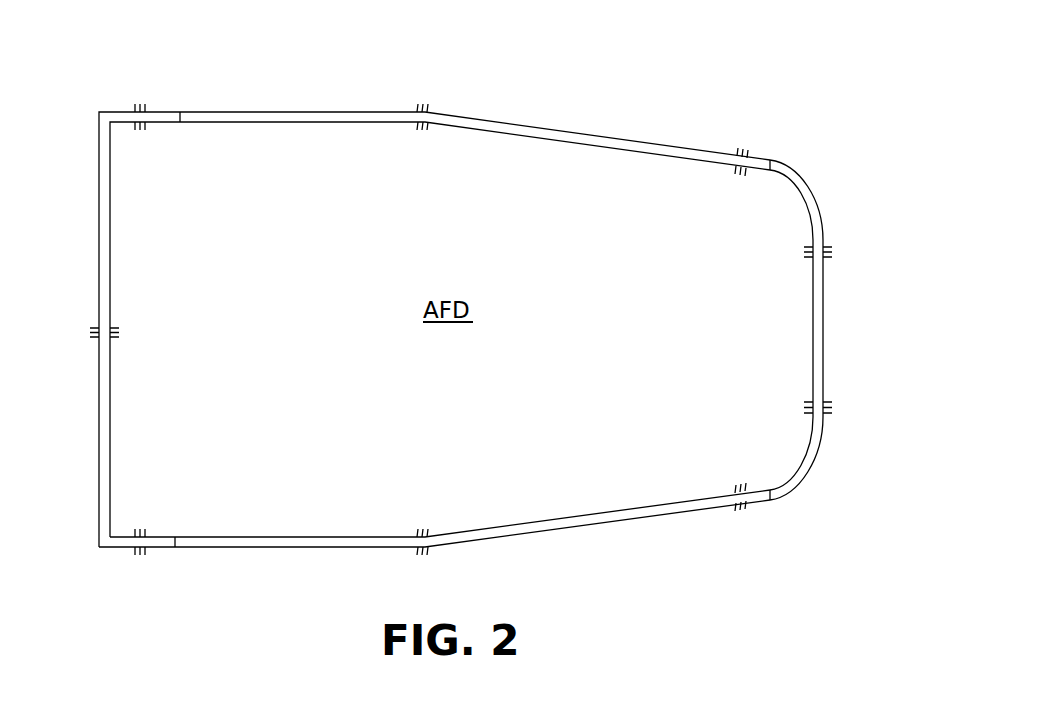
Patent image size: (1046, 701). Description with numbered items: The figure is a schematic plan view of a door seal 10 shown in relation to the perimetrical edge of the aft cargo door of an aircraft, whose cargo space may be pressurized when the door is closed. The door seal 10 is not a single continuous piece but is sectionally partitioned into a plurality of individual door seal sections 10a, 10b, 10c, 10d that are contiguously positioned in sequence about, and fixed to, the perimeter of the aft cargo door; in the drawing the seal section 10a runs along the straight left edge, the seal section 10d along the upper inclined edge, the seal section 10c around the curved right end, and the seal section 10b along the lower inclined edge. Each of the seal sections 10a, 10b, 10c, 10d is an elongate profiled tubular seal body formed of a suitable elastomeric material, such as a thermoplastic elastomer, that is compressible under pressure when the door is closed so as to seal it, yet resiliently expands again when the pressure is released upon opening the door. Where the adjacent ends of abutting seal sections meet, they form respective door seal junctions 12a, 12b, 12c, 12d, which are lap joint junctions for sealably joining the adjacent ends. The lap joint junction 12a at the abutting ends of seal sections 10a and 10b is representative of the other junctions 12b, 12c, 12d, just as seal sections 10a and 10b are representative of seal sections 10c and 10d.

The door seal 10 is at (640, 136).
The door seal section 10a is at (105, 262).
The door seal section 10b is at (496, 530).
The door seal section 10c is at (818, 311).
The door seal section 10d is at (531, 126).
The door seal junction 12a is at (190, 546).
The door seal junction 12b is at (763, 505).
The door seal junction 12c is at (769, 152).
The door seal junction 12d is at (192, 110).